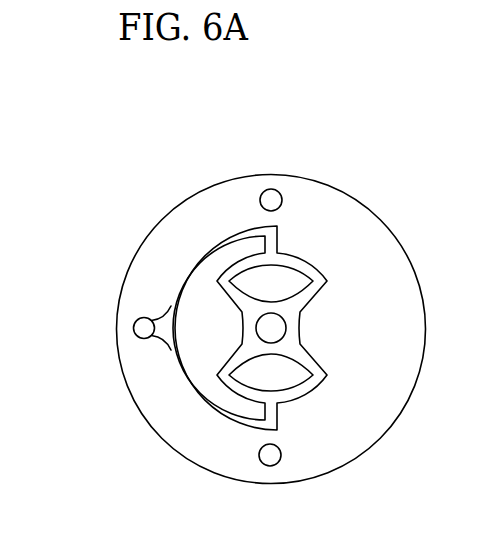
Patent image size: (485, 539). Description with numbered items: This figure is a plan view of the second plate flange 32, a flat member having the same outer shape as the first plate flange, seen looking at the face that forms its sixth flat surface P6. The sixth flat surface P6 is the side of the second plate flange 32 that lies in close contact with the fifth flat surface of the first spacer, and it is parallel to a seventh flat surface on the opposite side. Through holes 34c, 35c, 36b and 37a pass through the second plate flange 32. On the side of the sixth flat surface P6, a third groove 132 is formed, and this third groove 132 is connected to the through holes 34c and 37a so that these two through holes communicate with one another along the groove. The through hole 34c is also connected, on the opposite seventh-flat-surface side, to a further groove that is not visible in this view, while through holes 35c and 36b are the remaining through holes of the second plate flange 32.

The second plate flange 32 is at (122, 173).
The third groove 132 is at (185, 380).
The through hole 34c is at (277, 332).
The through hole 37a is at (144, 328).
The through hole 35c is at (275, 194).
The through hole 36b is at (270, 457).
The sixth flat surface P6 is at (357, 432).